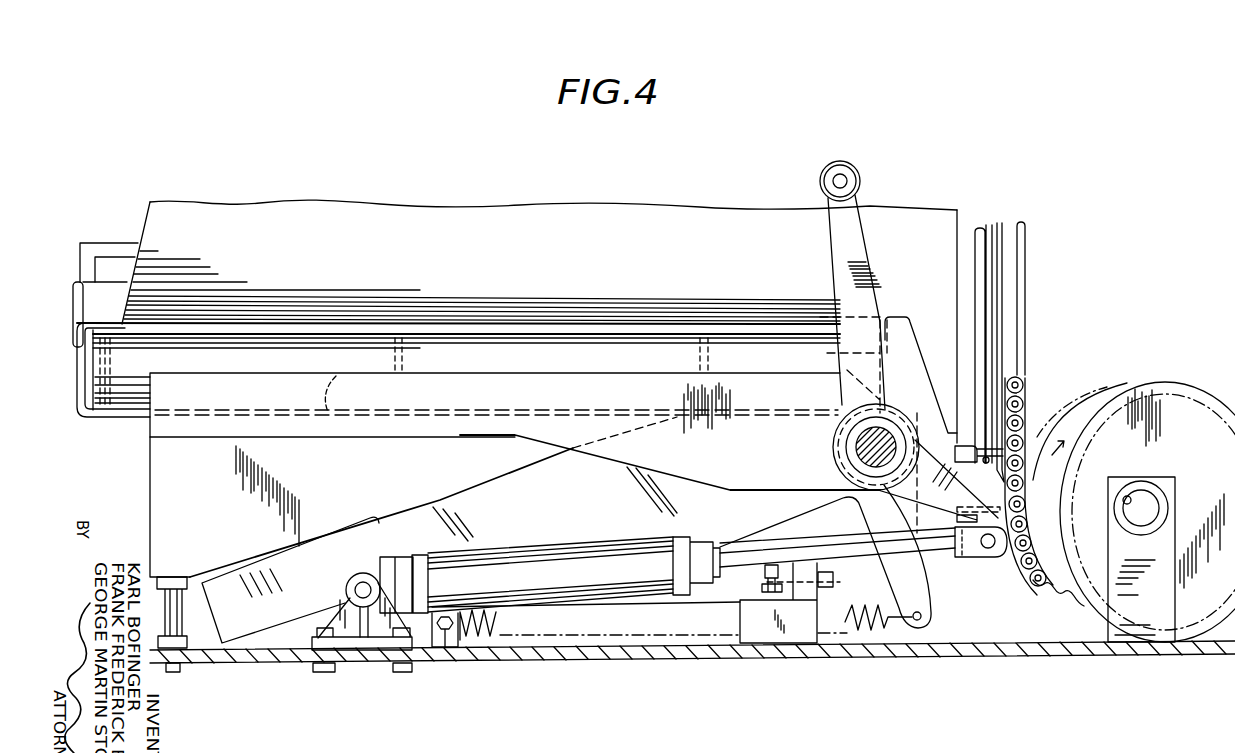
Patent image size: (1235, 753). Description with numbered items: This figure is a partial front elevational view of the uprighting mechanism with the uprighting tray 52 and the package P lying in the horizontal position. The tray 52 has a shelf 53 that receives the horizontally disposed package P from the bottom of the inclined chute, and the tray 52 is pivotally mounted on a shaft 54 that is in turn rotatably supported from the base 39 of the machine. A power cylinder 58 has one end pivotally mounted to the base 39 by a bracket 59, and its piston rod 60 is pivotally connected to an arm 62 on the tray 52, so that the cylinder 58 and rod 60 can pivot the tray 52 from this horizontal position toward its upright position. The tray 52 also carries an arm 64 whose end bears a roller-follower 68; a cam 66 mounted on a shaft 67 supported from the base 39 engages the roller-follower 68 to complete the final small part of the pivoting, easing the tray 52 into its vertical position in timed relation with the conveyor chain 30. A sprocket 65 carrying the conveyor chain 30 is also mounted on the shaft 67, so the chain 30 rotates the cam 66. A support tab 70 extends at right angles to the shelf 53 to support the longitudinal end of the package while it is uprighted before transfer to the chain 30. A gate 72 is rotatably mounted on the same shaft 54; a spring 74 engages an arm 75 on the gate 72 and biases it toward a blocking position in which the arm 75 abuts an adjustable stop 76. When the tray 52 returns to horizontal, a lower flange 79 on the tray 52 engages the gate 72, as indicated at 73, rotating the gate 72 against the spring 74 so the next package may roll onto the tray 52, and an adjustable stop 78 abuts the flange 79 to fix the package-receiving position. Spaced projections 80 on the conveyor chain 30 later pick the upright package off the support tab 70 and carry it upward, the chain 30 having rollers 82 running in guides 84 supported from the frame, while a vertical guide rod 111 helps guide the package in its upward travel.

The package P is at (123, 398).
The conveyor chain 30 is at (1026, 585).
The base 39 is at (298, 653).
The tray 52 is at (279, 384).
The shelf 53 is at (337, 376).
The shaft 54 is at (857, 463).
The power cylinder 58 is at (597, 524).
The bracket 59 is at (382, 651).
The piston rod 60 is at (843, 548).
The arm 62 is at (925, 506).
The arm 64 is at (838, 257).
The sprocket 65 is at (1102, 611).
The cam 66 is at (1153, 392).
The shaft 67 is at (1150, 506).
The roller-follower 68 is at (839, 165).
The support tab 70 is at (835, 353).
The gate 72 is at (238, 648).
The engagement point 73 is at (419, 497).
The spring 74 is at (499, 641).
The arm 75 is at (912, 580).
The adjustable stop 76 is at (834, 579).
The adjustable stop 78 is at (192, 628).
The lower flange 79 is at (162, 500).
The projection 80 is at (955, 440).
The rollers 82 is at (1025, 386).
The guides 84 is at (1027, 275).
The guide rod 111 is at (980, 228).